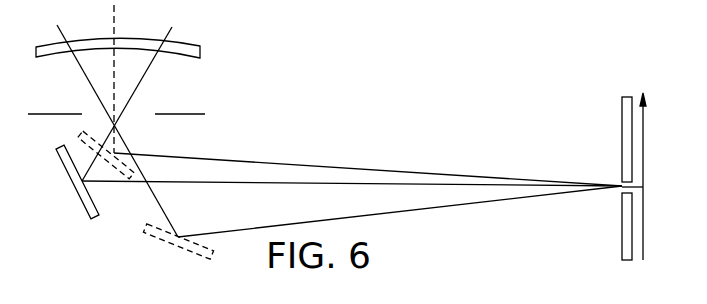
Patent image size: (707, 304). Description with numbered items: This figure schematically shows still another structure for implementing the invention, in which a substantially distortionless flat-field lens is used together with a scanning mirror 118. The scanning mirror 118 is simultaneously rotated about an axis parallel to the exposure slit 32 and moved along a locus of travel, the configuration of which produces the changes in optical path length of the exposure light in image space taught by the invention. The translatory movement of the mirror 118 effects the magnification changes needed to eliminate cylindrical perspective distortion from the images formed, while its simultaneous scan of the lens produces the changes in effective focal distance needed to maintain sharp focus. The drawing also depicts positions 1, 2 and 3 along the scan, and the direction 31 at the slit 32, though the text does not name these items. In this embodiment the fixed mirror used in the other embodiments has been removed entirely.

The scanning mirror 118 is at (187, 50).
The mirror 1 is at (70, 168).
The beam splitter 2 is at (106, 168).
The mirror 3 is at (178, 247).
The exposure slit 32 is at (617, 181).
The detector plane 31 is at (644, 119).